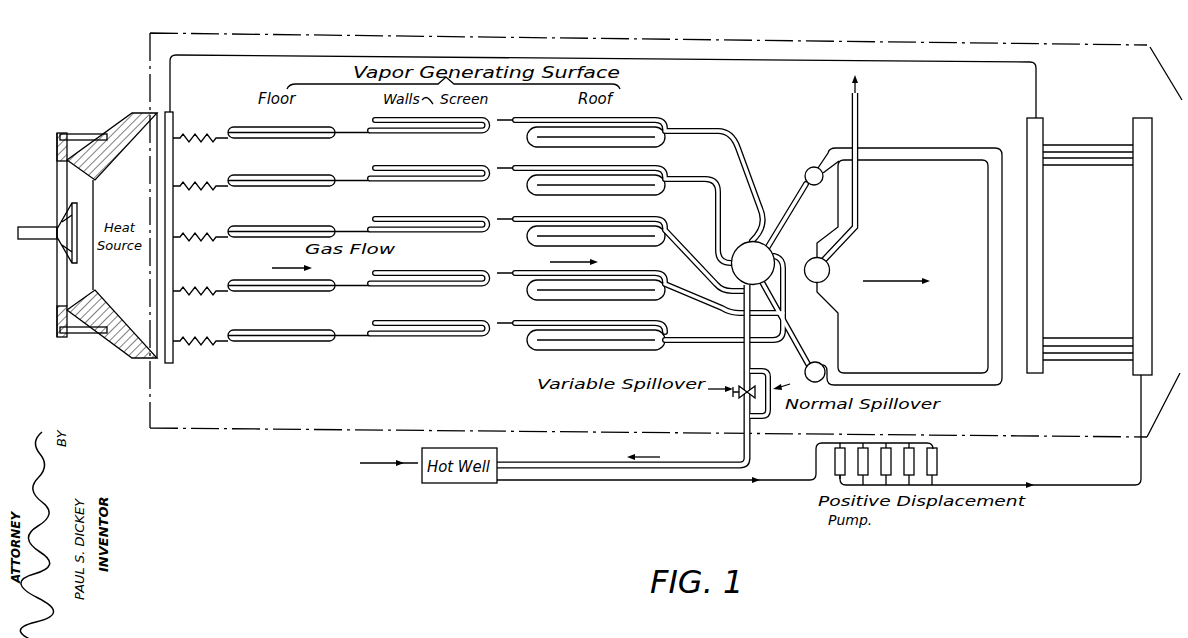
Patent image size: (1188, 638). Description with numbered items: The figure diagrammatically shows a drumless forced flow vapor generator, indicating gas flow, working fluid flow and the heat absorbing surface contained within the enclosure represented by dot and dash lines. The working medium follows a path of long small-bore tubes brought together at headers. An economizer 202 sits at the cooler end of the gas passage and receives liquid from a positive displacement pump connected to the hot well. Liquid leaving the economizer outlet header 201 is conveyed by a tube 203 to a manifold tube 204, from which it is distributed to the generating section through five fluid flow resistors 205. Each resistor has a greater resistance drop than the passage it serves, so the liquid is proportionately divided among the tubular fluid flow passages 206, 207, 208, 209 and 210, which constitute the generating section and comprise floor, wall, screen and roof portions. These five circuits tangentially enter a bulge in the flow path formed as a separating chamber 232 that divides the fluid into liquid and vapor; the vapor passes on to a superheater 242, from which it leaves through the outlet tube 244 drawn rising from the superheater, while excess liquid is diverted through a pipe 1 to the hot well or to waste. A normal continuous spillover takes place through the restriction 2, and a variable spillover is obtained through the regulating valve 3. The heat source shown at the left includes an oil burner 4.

The pipe 1 is at (752, 452).
The restriction 2 is at (773, 405).
The regulating valve 3 is at (736, 402).
The oil burner 4 is at (22, 240).
The economizer outlet header 201 is at (1034, 373).
The economizer 202 is at (1097, 233).
The tube 203 is at (984, 73).
The manifold tube 204 is at (171, 112).
The fluid flow resistors 205 is at (200, 295).
The tubular fluid flow passage 206 is at (285, 146).
The tubular fluid flow passage 207 is at (285, 195).
The tubular fluid flow passage 208 is at (285, 246).
The tubular fluid flow passage 209 is at (285, 296).
The tubular fluid flow passage 210 is at (296, 332).
The separating chamber 232 is at (752, 241).
The superheater 242 is at (909, 245).
The superheater outlet tube 244 is at (848, 102).